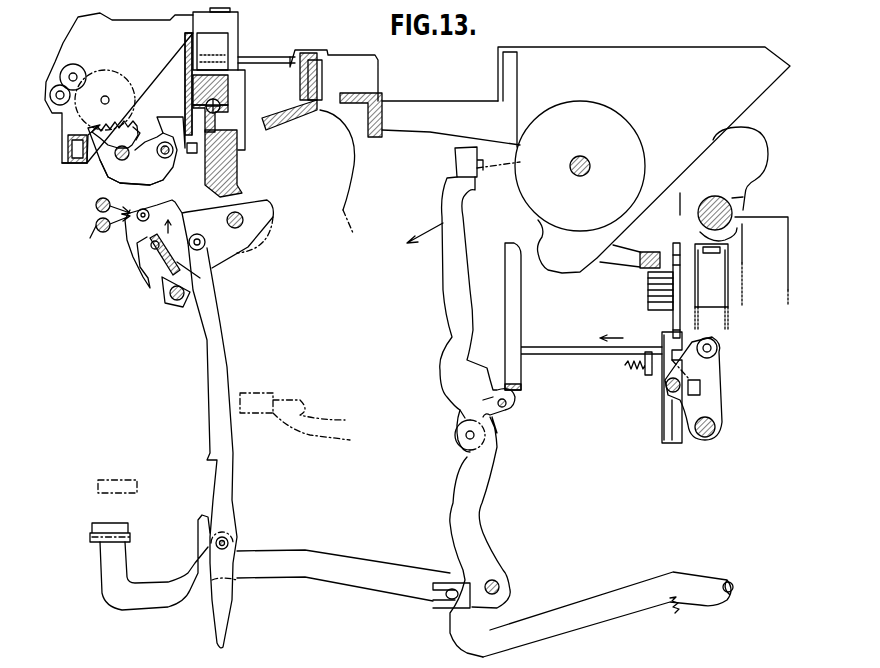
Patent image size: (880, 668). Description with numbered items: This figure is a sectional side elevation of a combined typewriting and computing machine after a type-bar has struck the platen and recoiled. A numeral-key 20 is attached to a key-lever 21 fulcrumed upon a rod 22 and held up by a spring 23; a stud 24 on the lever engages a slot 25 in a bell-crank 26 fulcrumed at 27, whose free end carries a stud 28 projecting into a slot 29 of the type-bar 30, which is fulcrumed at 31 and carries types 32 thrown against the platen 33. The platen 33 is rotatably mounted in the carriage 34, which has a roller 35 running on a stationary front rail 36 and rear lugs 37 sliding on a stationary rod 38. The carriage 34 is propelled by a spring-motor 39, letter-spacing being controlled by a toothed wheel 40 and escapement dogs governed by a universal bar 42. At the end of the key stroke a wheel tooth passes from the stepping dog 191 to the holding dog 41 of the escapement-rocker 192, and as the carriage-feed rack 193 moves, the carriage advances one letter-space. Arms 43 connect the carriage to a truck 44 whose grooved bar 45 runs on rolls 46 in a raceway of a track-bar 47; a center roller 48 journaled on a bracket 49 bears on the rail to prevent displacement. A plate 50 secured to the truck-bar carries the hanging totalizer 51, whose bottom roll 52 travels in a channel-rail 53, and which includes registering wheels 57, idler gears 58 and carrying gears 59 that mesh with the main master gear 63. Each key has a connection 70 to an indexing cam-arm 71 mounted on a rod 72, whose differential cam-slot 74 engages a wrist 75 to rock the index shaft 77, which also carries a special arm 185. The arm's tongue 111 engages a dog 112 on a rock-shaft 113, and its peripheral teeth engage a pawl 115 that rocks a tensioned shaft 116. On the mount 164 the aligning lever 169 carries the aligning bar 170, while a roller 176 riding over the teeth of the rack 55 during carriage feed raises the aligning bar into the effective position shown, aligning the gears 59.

The numeral-key 20 is at (131, 530).
The key-lever 21 is at (343, 575).
The rod 22 is at (733, 582).
The spring 23 is at (680, 608).
The stud 24 is at (432, 605).
The slot 25 is at (457, 600).
The bell-crank 26 is at (494, 530).
The fulcrum 27 is at (500, 587).
The stud 28 is at (490, 436).
The slot 29 is at (475, 417).
The type-bar 30 is at (447, 297).
The fulcrum 31 is at (497, 397).
The types 32 is at (456, 161).
The platen 33 is at (644, 160).
The carriage 34 is at (420, 163).
The roller 35 is at (322, 74).
The front rail 36 is at (290, 118).
The rear lugs 37 is at (724, 184).
The rod 38 is at (743, 247).
The spring-motor 39 is at (711, 287).
The toothed wheel 40 is at (672, 322).
The holding dog 41 is at (662, 380).
The universal bar 42 is at (521, 313).
The arms 43 is at (304, 49).
The truck 44 is at (177, 56).
The grooved bar 45 is at (229, 84).
The rolls 46 is at (221, 107).
The track-bar 47 is at (234, 160).
The center roller 48 is at (215, 39).
The bracket 49 is at (239, 55).
The plate 50 is at (184, 92).
The totalizer 51 is at (66, 40).
The bottom roll 52 is at (67, 146).
The channel-rail 53 is at (75, 163).
The rack 55 is at (210, 119).
The registering wheels 57 is at (50, 103).
The idler gears 58 is at (78, 65).
The carrying gears 59 is at (128, 90).
The main master gear 63 is at (137, 126).
The connection 70 is at (208, 378).
The indexing cam-arm 71 is at (201, 234).
The rod 72 is at (243, 225).
The cam-slot 74 is at (175, 249).
The wrist 75 is at (160, 246).
The rock-shaft 77 is at (184, 308).
The cam shoe or tongue 111 is at (128, 250).
The dog 112 is at (110, 232).
The rock-shaft 113 is at (84, 239).
The pawl 115 is at (138, 210).
The tensioned shaft 116 is at (96, 206).
The mount 164 is at (159, 159).
The aligning lever 169 is at (124, 177).
The aligning bar 170 is at (100, 124).
The roller 176 is at (191, 153).
The arm 185 is at (170, 300).
The stepping dog 191 is at (692, 342).
The escapement-rocker 192 is at (664, 412).
The carriage-feed rack 193 is at (646, 286).